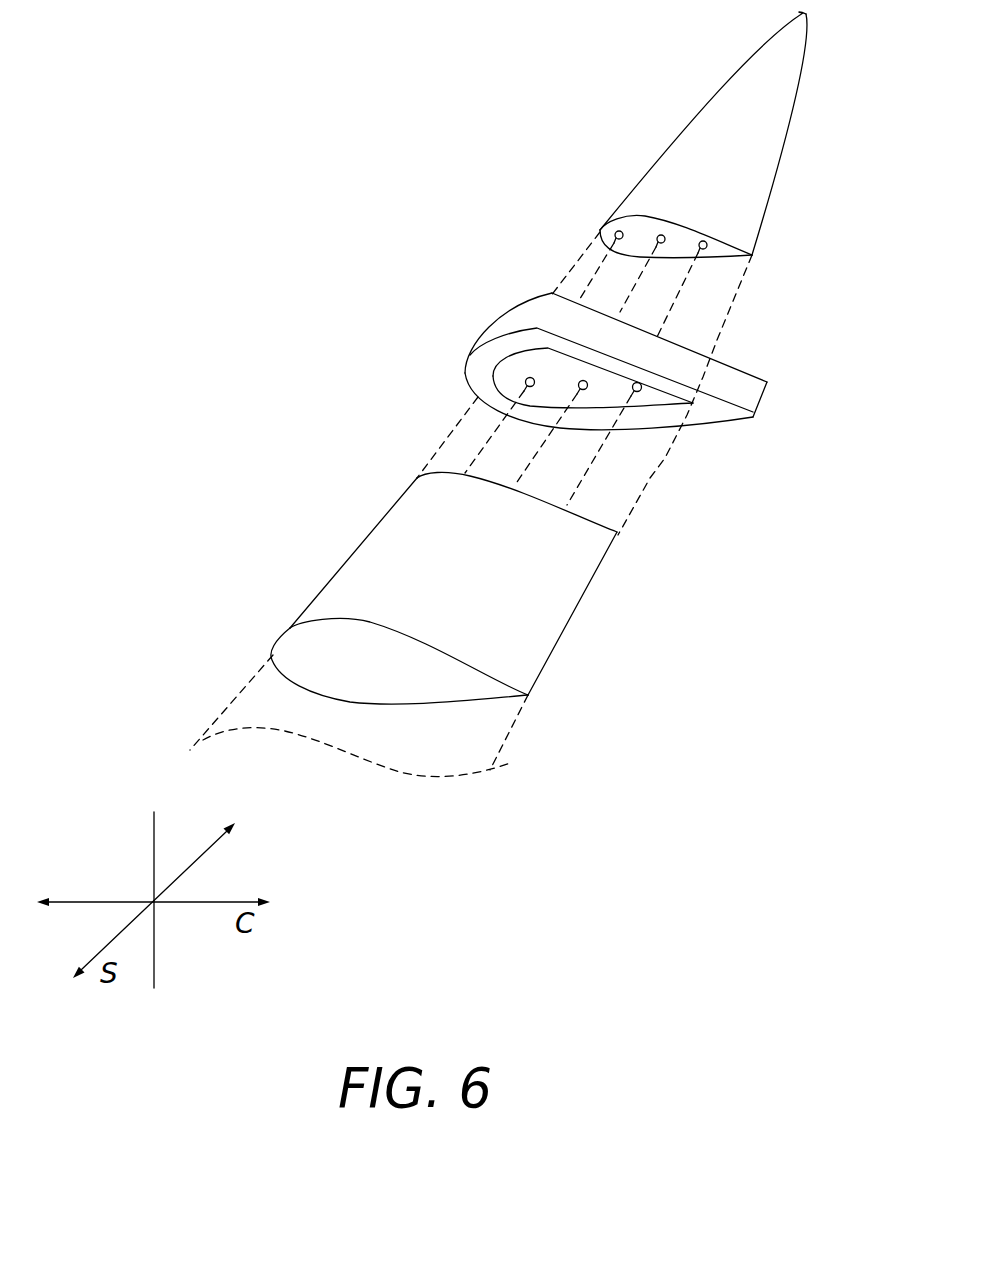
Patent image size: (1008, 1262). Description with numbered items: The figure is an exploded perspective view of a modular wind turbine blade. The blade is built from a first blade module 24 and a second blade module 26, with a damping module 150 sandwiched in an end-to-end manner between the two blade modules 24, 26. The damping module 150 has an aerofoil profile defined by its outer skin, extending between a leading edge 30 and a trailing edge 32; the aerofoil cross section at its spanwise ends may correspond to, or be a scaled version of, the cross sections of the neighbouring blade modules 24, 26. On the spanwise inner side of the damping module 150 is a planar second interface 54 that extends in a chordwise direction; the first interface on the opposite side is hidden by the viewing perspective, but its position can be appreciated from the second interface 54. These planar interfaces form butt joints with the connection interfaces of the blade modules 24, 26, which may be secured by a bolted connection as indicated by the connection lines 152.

The first blade module 24 is at (766, 143).
The second blade module 26 is at (552, 617).
The leading edge 30 is at (470, 355).
The trailing edge 32 is at (760, 403).
The second interface 54 is at (658, 405).
The damping module 150 is at (641, 393).
The connection lines 152 is at (675, 305).